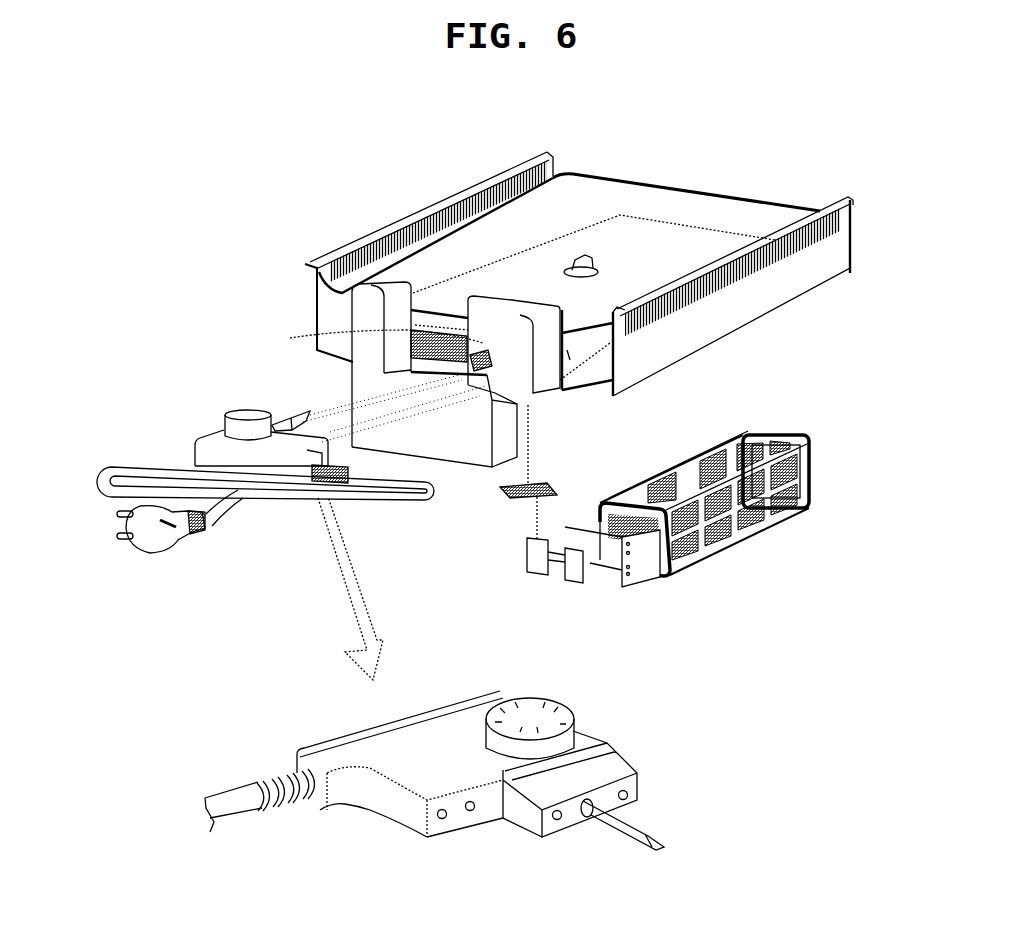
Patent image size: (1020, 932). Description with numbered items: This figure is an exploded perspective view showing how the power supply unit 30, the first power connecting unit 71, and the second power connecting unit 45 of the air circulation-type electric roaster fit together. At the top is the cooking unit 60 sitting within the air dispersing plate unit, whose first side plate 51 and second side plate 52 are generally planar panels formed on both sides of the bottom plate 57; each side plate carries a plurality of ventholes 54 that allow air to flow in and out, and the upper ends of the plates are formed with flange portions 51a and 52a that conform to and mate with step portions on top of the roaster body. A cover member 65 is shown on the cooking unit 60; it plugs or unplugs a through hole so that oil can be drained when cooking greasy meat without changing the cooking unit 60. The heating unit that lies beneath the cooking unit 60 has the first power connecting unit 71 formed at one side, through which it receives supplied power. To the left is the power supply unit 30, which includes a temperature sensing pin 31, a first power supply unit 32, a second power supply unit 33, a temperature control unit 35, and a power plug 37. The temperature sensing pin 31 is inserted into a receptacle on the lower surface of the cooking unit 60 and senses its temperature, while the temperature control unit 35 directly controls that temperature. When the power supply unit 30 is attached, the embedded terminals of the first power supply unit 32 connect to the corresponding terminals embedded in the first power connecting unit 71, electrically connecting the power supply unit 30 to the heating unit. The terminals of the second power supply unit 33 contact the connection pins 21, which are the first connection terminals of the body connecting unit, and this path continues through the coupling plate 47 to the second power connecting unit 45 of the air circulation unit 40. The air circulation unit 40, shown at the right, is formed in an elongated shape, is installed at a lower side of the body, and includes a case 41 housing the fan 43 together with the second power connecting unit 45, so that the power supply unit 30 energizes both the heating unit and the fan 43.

The connection pins 21 is at (493, 352).
The power supply unit 30 is at (193, 430).
The temperature sensing pin 31 is at (300, 412).
The first power supply unit 32 is at (623, 800).
The second power supply unit 33 is at (348, 472).
The temperature control unit 35 is at (237, 410).
The power plug 37 is at (187, 533).
The air circulation unit 40 is at (802, 422).
The case 41 is at (763, 433).
The fan 43 is at (728, 523).
The second power connecting unit 45 is at (527, 543).
The coupling plate 47 is at (555, 476).
The first side plate 51 is at (548, 150).
The flange portion 51a is at (487, 177).
The second side plate 52 is at (787, 275).
The flange portion 52a is at (792, 218).
The ventholes 54 is at (433, 213).
The bottom plate 57 is at (597, 375).
The cooking unit 60 is at (650, 197).
The cover member 65 is at (597, 260).
The first power connecting unit 71 is at (478, 372).